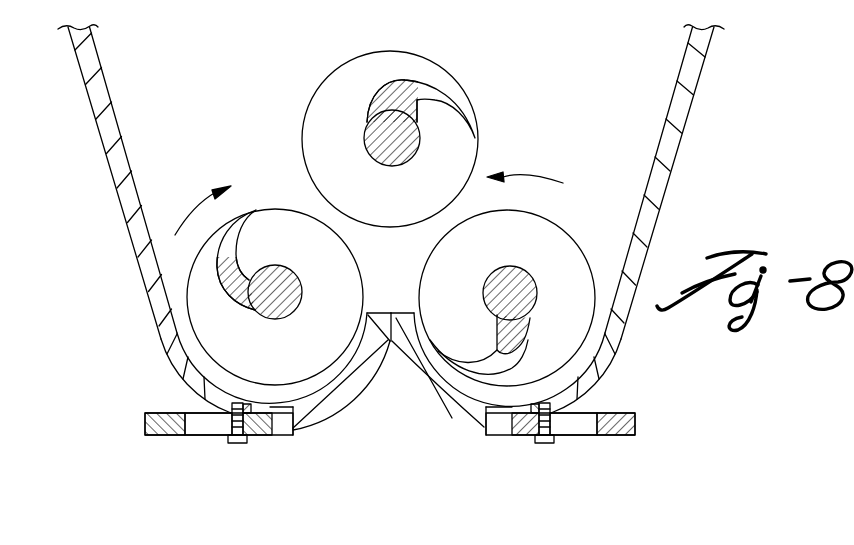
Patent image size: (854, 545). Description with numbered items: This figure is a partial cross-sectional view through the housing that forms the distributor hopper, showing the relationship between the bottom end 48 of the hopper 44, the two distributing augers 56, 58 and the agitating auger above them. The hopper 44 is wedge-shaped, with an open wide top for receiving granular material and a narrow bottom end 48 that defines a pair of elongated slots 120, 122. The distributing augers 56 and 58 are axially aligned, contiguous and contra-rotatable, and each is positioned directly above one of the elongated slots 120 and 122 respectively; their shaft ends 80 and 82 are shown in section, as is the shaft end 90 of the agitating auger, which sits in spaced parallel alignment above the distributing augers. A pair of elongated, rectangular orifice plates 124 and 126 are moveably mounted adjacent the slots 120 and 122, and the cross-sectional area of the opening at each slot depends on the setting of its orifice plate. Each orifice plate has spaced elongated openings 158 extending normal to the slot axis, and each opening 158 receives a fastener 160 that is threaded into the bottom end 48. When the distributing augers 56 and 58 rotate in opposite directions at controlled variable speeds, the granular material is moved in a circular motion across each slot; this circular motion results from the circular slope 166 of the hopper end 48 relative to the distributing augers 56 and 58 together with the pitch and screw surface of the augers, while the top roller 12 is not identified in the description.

The top roller 12 is at (408, 70).
The hopper 44 is at (110, 78).
The narrow bottom end 48 is at (168, 327).
The distributing auger 56 is at (278, 222).
The distributing auger 58 is at (532, 232).
The shaft end 80 is at (285, 292).
The shaft end 82 is at (520, 285).
The shaft end 90 is at (405, 133).
The elongated slot 120 is at (289, 422).
The elongated slot 122 is at (500, 419).
The orifice plate 124 is at (163, 436).
The orifice plate 126 is at (636, 426).
The elongated opening 158 is at (207, 427).
The fastener 160 is at (233, 446).
The circular slope 166 is at (208, 367).